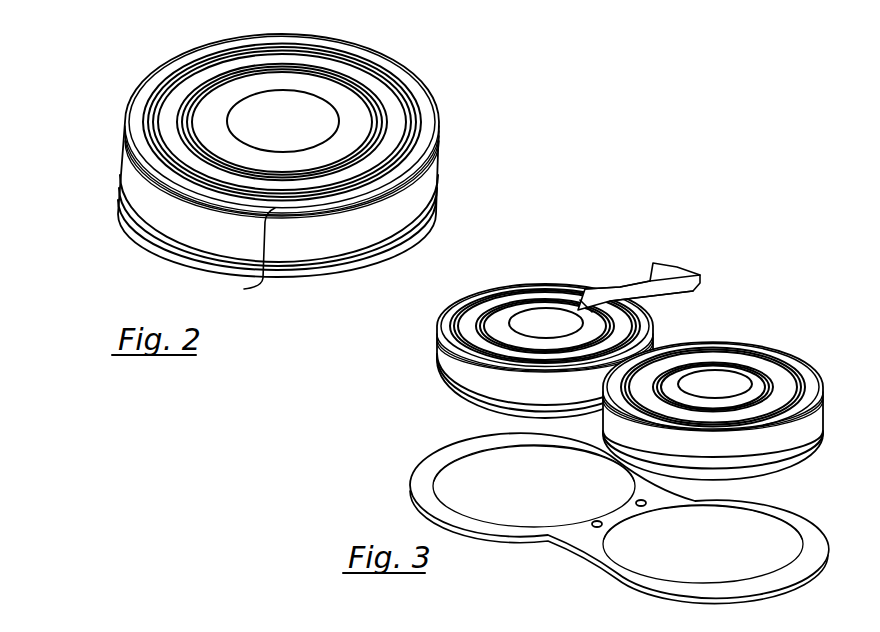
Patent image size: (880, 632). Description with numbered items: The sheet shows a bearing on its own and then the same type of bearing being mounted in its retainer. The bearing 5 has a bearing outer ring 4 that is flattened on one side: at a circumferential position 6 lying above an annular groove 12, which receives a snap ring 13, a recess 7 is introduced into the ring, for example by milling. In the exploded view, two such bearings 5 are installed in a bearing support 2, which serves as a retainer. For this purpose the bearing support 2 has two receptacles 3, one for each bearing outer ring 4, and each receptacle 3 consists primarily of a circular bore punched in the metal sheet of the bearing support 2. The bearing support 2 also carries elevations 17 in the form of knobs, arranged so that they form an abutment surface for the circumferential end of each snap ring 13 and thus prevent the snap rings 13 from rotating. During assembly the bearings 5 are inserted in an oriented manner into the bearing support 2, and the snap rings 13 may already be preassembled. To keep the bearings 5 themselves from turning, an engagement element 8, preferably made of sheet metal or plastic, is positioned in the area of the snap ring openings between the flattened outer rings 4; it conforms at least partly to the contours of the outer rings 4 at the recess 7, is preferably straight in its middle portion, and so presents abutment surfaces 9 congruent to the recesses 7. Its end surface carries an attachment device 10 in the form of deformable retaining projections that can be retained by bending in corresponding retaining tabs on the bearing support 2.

In FIG. 3, the bearing support 2 is at (420, 470).
In FIG. 3, the receptacle 3 is at (548, 450).
In FIG. 2, the bearing outer ring 4 is at (152, 200).
In FIG. 2, the bearing 5 is at (96, 81).
In FIG. 3, the bearing 5 is at (463, 372).
In FIG. 2, the circumferential position 6 is at (404, 254).
In FIG. 2, the recess 7 is at (418, 179).
In FIG. 3, the engagement element 8 is at (646, 282).
In FIG. 3, the abutment surface 9 is at (627, 282).
In FIG. 3, the attachment device 10 is at (578, 296).
In FIG. 2, the annular groove 12 is at (240, 267).
In FIG. 3, the snap ring 13 is at (723, 345).
In FIG. 3, the elevation 17 is at (604, 527).